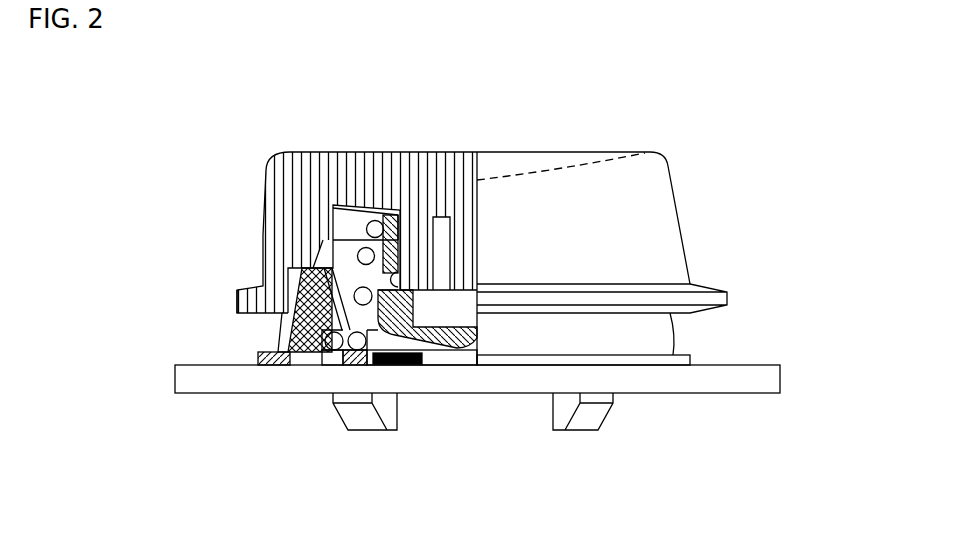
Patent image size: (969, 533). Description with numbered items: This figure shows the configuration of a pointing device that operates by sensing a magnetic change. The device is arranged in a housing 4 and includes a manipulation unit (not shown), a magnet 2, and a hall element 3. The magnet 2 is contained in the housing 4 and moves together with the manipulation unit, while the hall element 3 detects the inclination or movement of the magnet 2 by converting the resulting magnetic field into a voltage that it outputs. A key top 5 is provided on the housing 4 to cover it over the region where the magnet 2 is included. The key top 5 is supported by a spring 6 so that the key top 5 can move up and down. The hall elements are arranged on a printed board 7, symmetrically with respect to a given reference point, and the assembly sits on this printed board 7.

The magnet 2 is at (468, 318).
The hall element 3 is at (408, 368).
The housing 4 is at (393, 327).
The key top 5 is at (293, 153).
The spring 6 is at (365, 226).
The printed board 7 is at (722, 378).